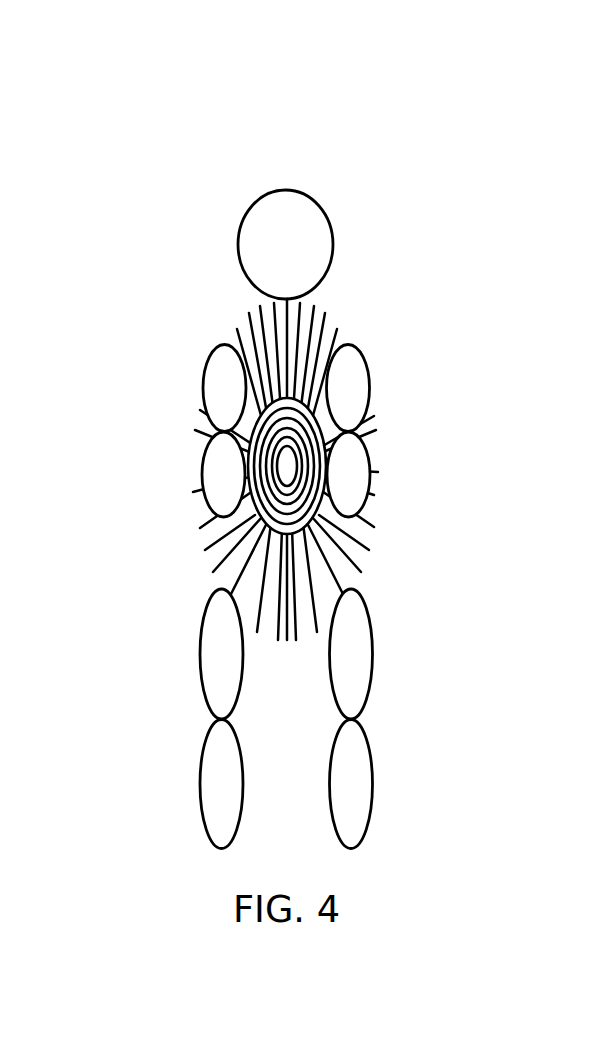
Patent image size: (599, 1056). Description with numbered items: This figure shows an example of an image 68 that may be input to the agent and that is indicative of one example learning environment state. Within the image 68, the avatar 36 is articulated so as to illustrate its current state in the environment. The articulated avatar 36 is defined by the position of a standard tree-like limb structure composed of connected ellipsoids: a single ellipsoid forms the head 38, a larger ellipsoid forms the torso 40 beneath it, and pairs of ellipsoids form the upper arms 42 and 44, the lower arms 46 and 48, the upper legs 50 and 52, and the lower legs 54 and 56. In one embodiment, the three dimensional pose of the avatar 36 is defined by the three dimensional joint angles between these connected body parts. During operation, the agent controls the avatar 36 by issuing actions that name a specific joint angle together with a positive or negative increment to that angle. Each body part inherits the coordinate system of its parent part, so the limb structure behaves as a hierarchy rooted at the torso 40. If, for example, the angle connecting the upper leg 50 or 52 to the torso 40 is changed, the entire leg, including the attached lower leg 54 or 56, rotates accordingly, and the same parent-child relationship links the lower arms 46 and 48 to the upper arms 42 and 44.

The image 68 is at (288, 86).
The avatar 36 is at (298, 178).
The head 38 is at (307, 240).
The torso 40 is at (328, 548).
The upper arm 42 is at (203, 372).
The upper arm 44 is at (370, 370).
The lower arm 46 is at (203, 455).
The lower arm 48 is at (370, 455).
The upper leg 50 is at (200, 642).
The upper leg 52 is at (373, 648).
The lower leg 54 is at (200, 777).
The lower leg 56 is at (373, 783).